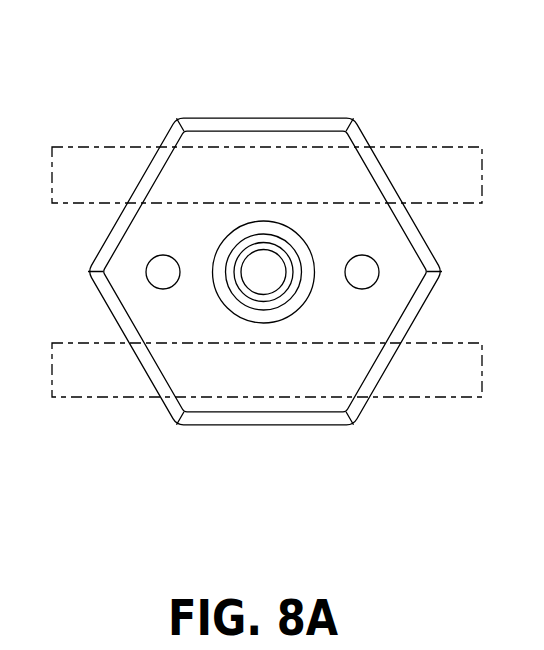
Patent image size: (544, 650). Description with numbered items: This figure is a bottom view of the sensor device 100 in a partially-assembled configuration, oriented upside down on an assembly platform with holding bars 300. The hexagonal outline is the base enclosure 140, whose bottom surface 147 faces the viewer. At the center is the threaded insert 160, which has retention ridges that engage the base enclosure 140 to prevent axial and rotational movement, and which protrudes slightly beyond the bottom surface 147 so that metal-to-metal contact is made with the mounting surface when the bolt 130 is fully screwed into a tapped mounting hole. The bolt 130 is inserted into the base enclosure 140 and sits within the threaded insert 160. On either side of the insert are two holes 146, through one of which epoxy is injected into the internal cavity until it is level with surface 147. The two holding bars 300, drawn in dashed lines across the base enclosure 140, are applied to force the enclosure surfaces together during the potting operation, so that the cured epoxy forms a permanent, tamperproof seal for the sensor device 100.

The sensor device 100 is at (118, 44).
The bolt 130 is at (253, 260).
The base enclosure 140 is at (193, 427).
The holes 146 is at (148, 262).
The bottom surface 147 is at (315, 137).
The threaded insert 160 is at (263, 226).
The holding bars 300 is at (100, 183).